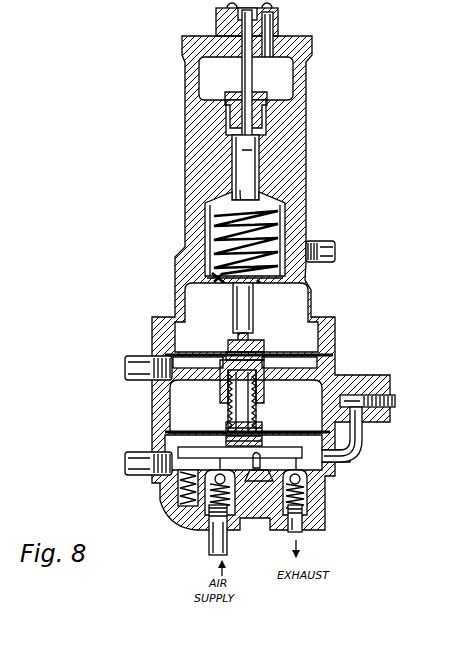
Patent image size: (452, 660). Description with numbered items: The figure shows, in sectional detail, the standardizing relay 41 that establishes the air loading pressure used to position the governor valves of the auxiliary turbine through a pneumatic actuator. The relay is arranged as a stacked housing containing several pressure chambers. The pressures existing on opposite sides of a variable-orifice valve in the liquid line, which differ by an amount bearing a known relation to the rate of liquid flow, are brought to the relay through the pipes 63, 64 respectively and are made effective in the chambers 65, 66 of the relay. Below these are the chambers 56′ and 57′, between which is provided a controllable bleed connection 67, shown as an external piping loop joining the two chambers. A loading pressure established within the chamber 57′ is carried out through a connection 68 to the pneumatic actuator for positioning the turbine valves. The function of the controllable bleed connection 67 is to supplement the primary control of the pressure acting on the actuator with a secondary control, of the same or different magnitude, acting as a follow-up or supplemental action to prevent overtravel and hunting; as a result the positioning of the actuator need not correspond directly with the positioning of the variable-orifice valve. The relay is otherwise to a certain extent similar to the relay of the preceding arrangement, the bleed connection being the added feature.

The standardizing relay 41 is at (184, 133).
The pipe 63 is at (326, 240).
The pipe 64 is at (138, 355).
The chamber 65 is at (254, 317).
The chamber 66 is at (249, 361).
The chamber 56′ is at (261, 396).
The chamber 57′ is at (247, 436).
The controllable bleed connection 67 is at (357, 446).
The connection 68 is at (137, 451).